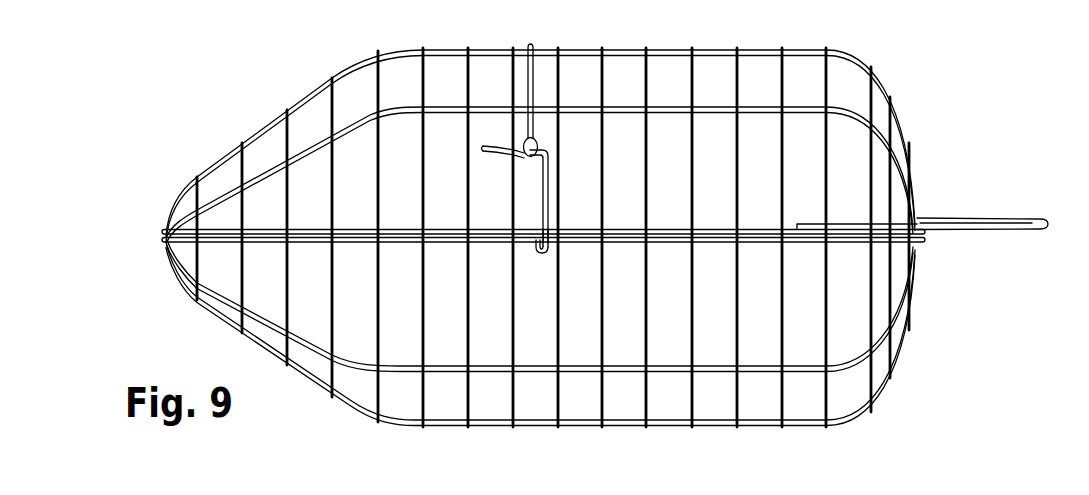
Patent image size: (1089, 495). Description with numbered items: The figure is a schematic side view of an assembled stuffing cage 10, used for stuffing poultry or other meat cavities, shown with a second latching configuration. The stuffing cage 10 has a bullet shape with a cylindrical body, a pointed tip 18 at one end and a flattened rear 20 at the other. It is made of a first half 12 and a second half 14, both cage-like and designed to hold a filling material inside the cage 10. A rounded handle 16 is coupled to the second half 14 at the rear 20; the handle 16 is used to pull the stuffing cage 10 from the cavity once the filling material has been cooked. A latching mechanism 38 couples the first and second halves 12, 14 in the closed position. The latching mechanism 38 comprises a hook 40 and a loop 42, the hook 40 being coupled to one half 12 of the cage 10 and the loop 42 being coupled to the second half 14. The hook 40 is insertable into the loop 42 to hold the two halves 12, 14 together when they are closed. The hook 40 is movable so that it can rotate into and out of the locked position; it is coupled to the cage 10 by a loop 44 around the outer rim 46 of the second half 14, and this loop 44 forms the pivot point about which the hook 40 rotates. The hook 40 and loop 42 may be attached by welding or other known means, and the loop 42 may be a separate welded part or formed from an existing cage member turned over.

The stuffing cage 10 is at (965, 107).
The first half 12 is at (705, 78).
The second half 14 is at (860, 0).
The handle 16 is at (980, 226).
The tip 18 is at (166, 262).
The rear 20 is at (900, 345).
The latching mechanism 38 is at (540, 0).
The hook 40 is at (550, 192).
The loop 42 is at (522, 168).
The loop 44 is at (538, 250).
The outer rim 46 is at (562, 238).